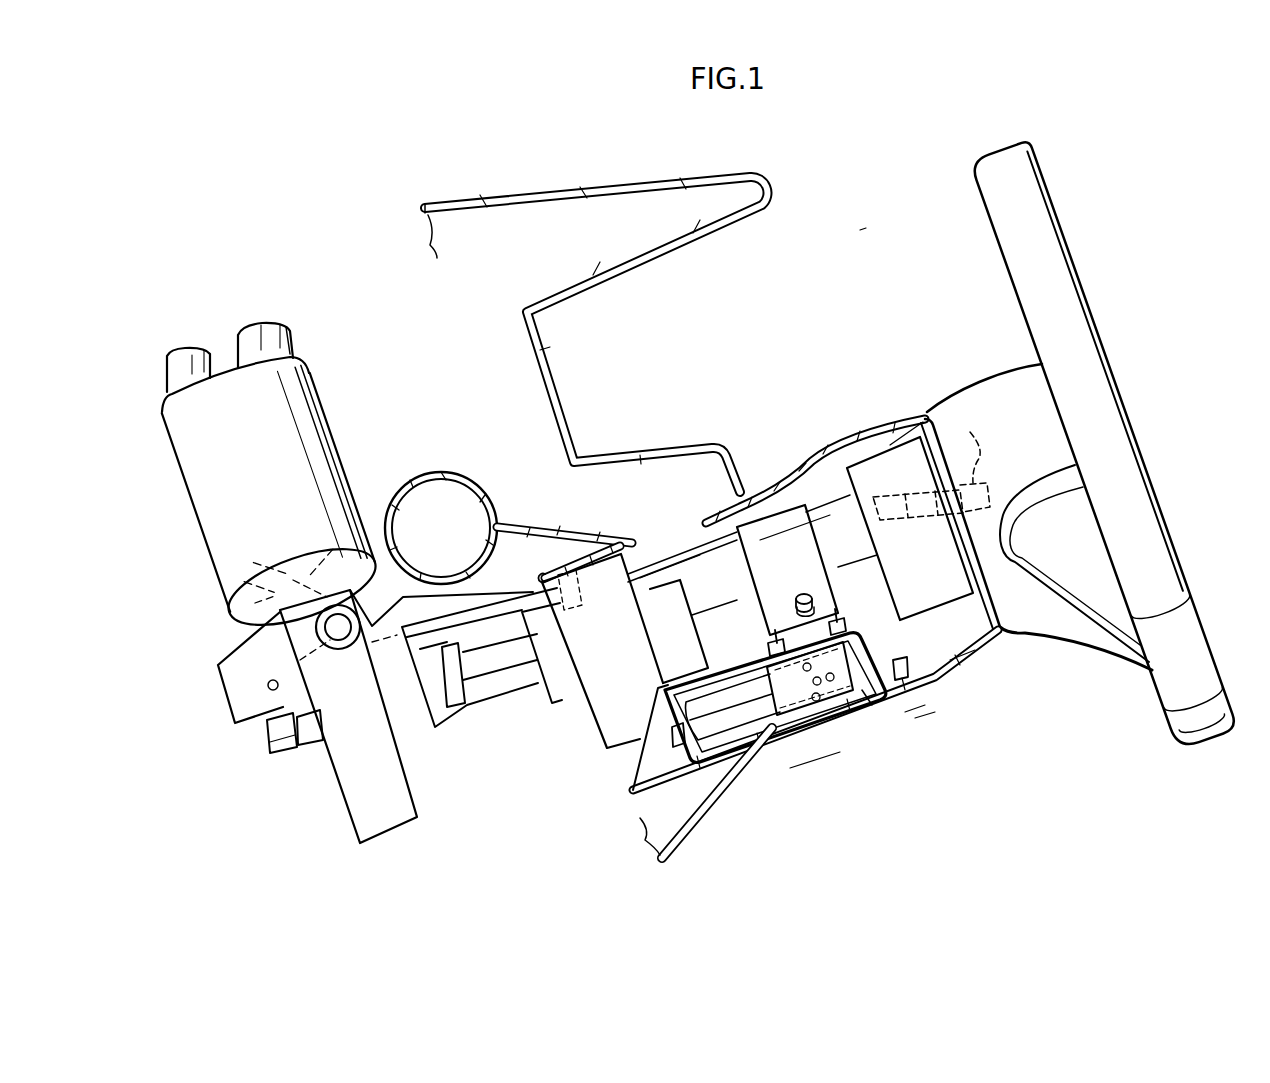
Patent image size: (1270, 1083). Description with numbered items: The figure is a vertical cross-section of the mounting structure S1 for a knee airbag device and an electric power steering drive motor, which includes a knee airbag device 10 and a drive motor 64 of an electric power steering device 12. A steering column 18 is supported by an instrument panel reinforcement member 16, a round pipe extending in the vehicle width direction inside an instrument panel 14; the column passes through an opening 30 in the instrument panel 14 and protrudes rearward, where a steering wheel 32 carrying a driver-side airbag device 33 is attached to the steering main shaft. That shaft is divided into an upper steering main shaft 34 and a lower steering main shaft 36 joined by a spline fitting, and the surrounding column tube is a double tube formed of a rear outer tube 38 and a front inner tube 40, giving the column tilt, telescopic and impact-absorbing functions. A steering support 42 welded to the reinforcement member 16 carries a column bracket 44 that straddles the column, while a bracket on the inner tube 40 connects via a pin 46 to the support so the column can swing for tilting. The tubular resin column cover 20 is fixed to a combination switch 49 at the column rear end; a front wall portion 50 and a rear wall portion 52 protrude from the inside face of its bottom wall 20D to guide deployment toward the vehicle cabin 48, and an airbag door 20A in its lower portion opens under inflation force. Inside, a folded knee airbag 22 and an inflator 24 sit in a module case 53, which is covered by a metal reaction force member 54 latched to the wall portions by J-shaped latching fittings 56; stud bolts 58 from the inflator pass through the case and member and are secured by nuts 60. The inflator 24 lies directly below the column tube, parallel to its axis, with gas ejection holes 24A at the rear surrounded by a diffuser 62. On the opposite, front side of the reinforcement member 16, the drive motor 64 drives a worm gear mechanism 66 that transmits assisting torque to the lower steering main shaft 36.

The knee airbag device 10 is at (913, 712).
The electric power steering device 12 is at (268, 298).
The instrument panel 14 is at (697, 828).
The instrument panel reinforcement member 16 is at (457, 470).
The steering column 18 is at (830, 478).
The column cover 20 is at (856, 424).
The airbag door 20A is at (818, 762).
The bottom wall 20D is at (962, 658).
The knee airbag 22 is at (805, 758).
The inflator 24 is at (742, 740).
The gas ejection holes 24A is at (830, 718).
The opening 30 is at (742, 426).
The steering wheel 32 is at (1068, 258).
The driver-side airbag device 33 is at (1136, 404).
The upper steering main shaft 34 is at (955, 463).
The lower steering main shaft 36 is at (283, 753).
The outer tube 38 is at (667, 563).
The inner tube 40 is at (487, 702).
The steering support 42 is at (522, 527).
The column bracket 44 is at (594, 721).
The pin 46 is at (270, 690).
The vehicle cabin 48 is at (915, 863).
The combination switch 49 is at (888, 446).
The front wall portion 50 is at (660, 686).
The rear wall portion 52 is at (905, 615).
The module case 53 is at (920, 716).
The reaction force member 54 is at (705, 675).
The latching fittings 56 is at (905, 665).
The stud bolts 58 is at (795, 635).
The nuts 60 is at (768, 646).
The diffuser 62 is at (864, 703).
The drive motor 64 is at (328, 413).
The worm gear mechanism 66 is at (400, 812).
The mounting structure S1 is at (864, 228).